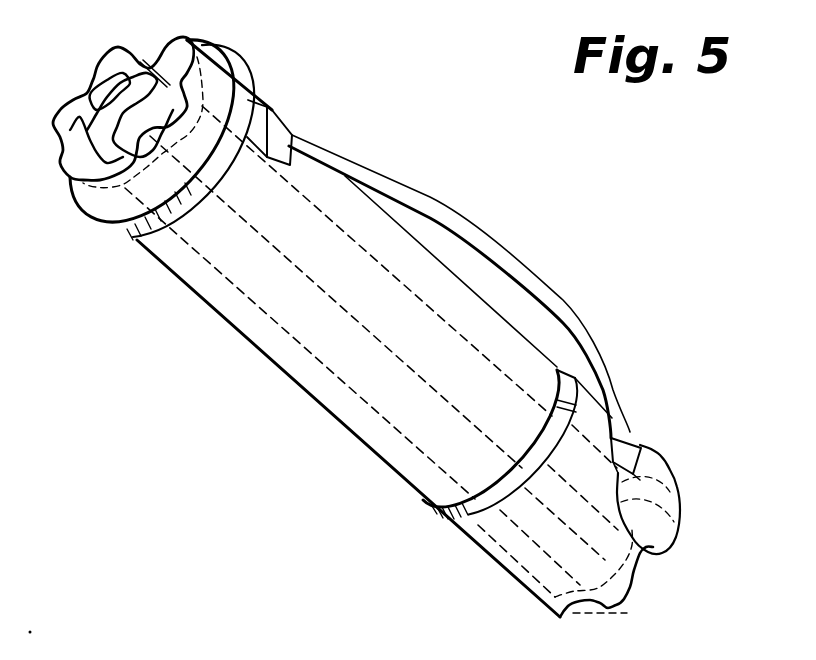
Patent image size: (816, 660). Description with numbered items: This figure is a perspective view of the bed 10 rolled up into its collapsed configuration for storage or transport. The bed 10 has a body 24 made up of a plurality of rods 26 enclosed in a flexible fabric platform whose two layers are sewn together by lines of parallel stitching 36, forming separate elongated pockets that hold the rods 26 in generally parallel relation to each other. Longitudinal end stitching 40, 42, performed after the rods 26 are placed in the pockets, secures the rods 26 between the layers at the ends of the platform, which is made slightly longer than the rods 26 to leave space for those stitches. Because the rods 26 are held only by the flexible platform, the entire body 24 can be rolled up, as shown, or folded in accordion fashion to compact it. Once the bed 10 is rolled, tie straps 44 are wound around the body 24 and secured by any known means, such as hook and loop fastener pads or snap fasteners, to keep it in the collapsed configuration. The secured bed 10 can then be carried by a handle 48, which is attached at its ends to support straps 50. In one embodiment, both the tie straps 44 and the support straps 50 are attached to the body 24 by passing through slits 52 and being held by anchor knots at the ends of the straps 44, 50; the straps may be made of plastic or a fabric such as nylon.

The bed 10 is at (455, 184).
The body 24 is at (351, 431).
The rods 26 is at (643, 573).
The parallel stitching 36 is at (270, 320).
The longitudinal end stitching 40 is at (663, 512).
The longitudinal end stitching 42 is at (208, 62).
The tie straps 44 is at (143, 240).
The handle 48 is at (513, 260).
The support straps 50 is at (278, 122).
The slits 52 is at (276, 165).